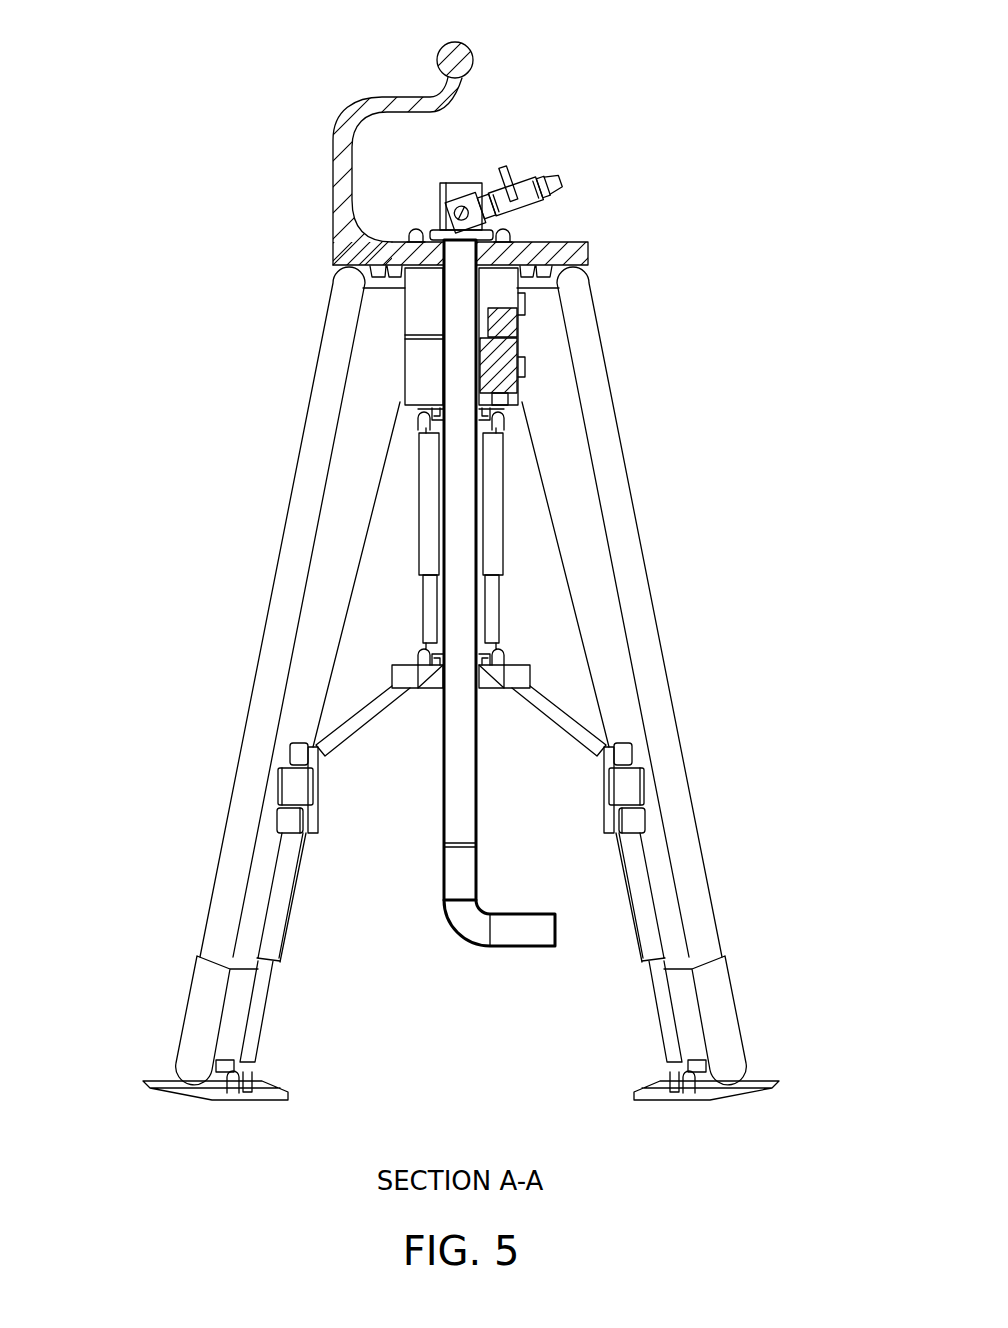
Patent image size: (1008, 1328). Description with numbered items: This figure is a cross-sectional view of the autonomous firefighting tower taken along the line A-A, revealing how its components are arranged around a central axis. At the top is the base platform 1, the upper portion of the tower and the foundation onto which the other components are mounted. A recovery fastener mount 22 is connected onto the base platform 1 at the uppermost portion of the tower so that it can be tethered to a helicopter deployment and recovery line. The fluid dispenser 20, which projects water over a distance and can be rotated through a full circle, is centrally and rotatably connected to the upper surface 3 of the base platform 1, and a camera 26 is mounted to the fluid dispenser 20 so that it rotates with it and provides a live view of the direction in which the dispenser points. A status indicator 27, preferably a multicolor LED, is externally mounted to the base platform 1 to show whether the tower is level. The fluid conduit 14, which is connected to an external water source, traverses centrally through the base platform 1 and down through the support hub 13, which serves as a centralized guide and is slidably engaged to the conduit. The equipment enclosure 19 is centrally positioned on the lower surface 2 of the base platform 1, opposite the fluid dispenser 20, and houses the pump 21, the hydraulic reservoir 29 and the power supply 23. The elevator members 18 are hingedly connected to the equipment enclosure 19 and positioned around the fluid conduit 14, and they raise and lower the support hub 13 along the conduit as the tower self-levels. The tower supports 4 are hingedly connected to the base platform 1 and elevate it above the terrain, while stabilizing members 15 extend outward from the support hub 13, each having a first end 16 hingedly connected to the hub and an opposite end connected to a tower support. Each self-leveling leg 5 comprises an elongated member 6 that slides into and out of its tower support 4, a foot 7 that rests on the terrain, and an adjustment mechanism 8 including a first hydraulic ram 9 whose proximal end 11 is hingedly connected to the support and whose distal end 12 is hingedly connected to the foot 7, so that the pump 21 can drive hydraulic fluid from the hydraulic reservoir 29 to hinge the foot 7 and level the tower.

The base platform 1 is at (620, 253).
The lower surface 2 is at (427, 274).
The upper surface 3 is at (393, 237).
The tower supports 4 is at (315, 405).
The self-leveling legs 5 is at (463, 686).
The elongated member 6 is at (198, 998).
The foot 7 is at (141, 1084).
The adjustment mechanism 8 is at (461, 747).
The first hydraulic ram 9 is at (268, 996).
The proximal end 11 is at (291, 842).
The distal end 12 is at (246, 1060).
The support hub 13 is at (512, 672).
The fluid conduit 14 is at (447, 919).
The stabilizing members 15 is at (350, 735).
The first end 16 is at (406, 693).
The elevator members 18 is at (424, 558).
The equipment enclosure 19 is at (404, 404).
The fluid dispenser 20 is at (566, 191).
The pump 21 is at (496, 408).
The recovery fastener mount 22 is at (458, 46).
The power supply 23 is at (510, 332).
The camera 26 is at (512, 170).
The status indicator 27 is at (414, 228).
The hydraulic reservoir 29 is at (505, 393).